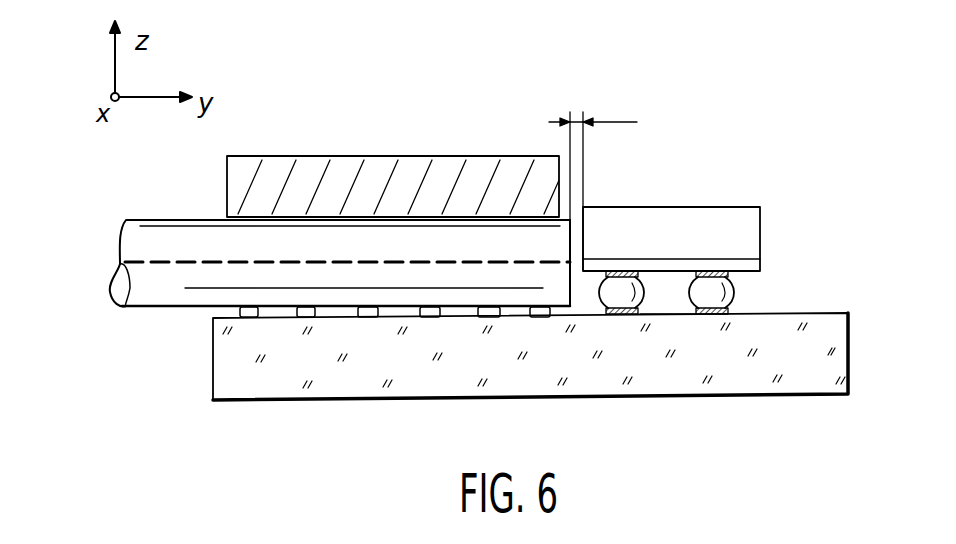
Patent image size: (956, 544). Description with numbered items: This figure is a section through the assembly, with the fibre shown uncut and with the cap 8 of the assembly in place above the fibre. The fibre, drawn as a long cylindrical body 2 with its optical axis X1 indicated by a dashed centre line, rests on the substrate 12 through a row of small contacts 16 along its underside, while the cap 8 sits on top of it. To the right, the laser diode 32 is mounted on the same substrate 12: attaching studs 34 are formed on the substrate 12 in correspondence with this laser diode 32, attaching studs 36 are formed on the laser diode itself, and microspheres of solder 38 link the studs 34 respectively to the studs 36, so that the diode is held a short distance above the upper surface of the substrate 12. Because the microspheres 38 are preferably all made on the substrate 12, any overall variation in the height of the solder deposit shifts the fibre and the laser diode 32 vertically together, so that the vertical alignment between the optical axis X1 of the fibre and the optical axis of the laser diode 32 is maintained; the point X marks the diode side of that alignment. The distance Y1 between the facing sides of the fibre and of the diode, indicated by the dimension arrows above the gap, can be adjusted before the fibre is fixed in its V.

The print head / rod body 2 is at (183, 220).
The cap 8 is at (349, 158).
The substrate 12 is at (813, 378).
The contact pads 16 is at (240, 311).
The laser diode 32 is at (668, 213).
The attaching studs 34 is at (712, 316).
The attaching studs 36 is at (742, 262).
The microspheres of solder 38 is at (724, 290).
The optical axis of the fibre X1 is at (160, 263).
The point X is at (730, 258).
The distance between the side of the fibre and the side of the diode Y1 is at (593, 183).